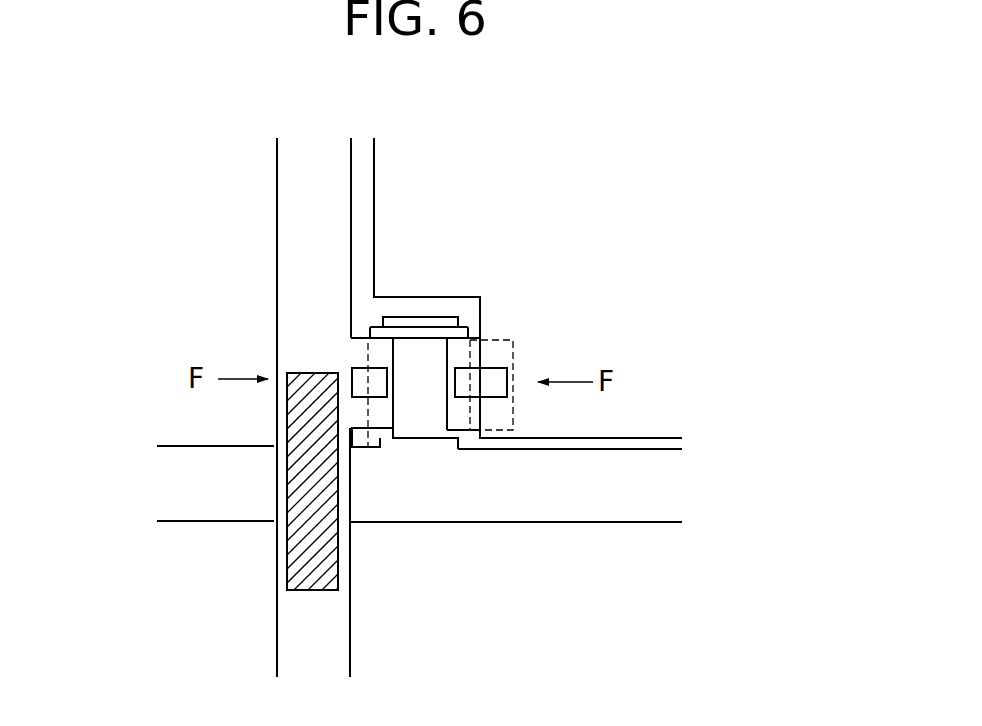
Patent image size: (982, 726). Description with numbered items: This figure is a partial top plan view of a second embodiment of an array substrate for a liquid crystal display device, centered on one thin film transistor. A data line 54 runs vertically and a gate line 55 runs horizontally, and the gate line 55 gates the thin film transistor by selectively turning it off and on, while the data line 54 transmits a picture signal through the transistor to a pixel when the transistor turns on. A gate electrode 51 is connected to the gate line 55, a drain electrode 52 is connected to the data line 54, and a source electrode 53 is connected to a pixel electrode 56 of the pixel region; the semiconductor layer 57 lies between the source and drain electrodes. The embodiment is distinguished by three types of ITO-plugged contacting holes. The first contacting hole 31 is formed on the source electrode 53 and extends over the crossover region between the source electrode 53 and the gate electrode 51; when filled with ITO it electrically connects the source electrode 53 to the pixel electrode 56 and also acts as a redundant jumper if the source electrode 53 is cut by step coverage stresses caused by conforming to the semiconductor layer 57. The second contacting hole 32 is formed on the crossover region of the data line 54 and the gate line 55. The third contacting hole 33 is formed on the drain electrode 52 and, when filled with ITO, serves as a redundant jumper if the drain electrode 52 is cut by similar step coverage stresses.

The first contacting hole 31 is at (498, 383).
The second contacting hole 32 is at (307, 543).
The third contacting hole 33 is at (377, 388).
The gate electrode 51 is at (432, 322).
The drain electrode 52 is at (360, 352).
The source electrode 53 is at (452, 356).
The data line 54 is at (302, 328).
The gate line 55 is at (483, 505).
The pixel electrode 56 is at (660, 320).
The semiconductor layer 57 is at (415, 412).